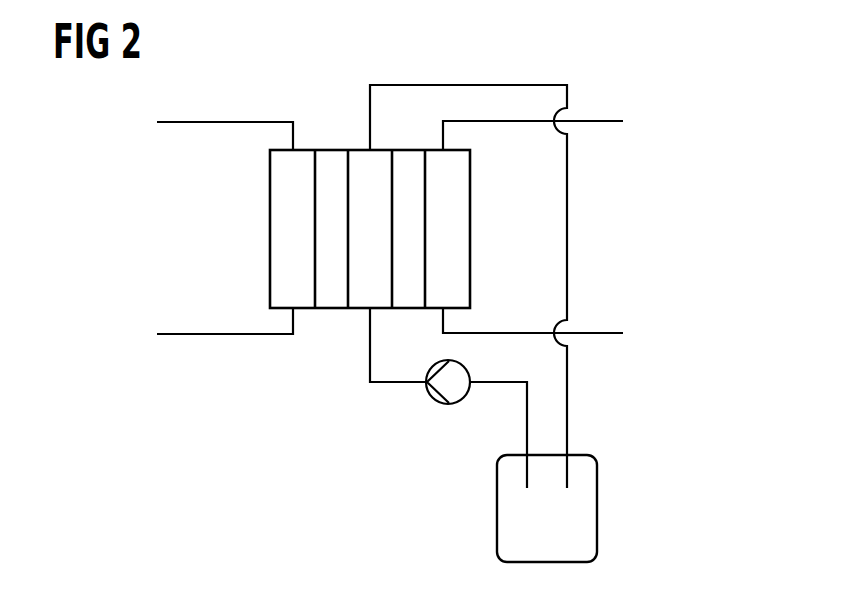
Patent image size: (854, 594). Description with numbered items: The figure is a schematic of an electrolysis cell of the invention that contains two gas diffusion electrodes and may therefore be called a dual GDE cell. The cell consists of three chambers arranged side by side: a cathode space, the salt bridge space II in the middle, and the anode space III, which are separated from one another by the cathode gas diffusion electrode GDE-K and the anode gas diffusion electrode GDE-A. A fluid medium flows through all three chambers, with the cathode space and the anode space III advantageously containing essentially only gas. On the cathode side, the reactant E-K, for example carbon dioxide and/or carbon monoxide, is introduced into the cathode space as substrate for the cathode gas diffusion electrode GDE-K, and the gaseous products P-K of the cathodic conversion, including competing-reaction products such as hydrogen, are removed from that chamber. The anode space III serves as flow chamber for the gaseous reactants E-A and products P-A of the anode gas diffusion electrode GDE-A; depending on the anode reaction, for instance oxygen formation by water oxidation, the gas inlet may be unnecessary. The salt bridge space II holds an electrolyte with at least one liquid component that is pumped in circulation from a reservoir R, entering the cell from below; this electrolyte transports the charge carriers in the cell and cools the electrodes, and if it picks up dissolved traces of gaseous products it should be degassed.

The cathode reactant E-K is at (171, 127).
The cathode products P-K is at (171, 331).
The anode reactants E-A is at (591, 126).
The anode products P-A is at (591, 330).
The cathode gas diffusion electrode GDE-K is at (333, 246).
The anode gas diffusion electrode GDE-A is at (409, 245).
The salt bridge space II is at (367, 217).
The anode space III is at (441, 217).
The reservoir R is at (547, 508).